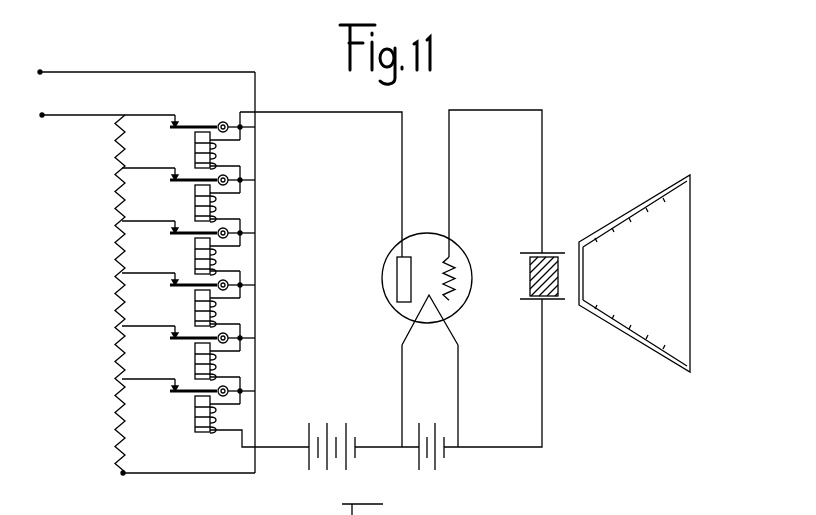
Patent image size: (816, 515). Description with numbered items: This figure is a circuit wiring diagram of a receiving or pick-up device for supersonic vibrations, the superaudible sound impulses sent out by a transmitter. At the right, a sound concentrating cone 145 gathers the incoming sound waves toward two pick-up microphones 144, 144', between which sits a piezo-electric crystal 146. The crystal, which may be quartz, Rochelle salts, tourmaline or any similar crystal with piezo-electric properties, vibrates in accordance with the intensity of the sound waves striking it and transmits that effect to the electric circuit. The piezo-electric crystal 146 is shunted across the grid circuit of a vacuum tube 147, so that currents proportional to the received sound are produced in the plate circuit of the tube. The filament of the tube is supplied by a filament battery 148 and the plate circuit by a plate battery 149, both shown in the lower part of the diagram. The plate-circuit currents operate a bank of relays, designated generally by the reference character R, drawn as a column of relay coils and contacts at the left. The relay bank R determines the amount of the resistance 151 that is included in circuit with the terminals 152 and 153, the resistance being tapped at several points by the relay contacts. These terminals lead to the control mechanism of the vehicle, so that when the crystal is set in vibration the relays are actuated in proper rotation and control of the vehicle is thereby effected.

The terminal 153 is at (41, 70).
The terminal 152 is at (42, 119).
The resistance 151 is at (115, 203).
The relay bank R is at (195, 266).
The vacuum tube 147 is at (459, 247).
The piezo-electric crystal 146 is at (530, 279).
The pick-up microphone 144 is at (552, 233).
The pick-up microphone 144' is at (556, 322).
The sound concentrating cone 145 is at (634, 273).
The plate battery 149 is at (347, 428).
The filament battery 148 is at (421, 424).